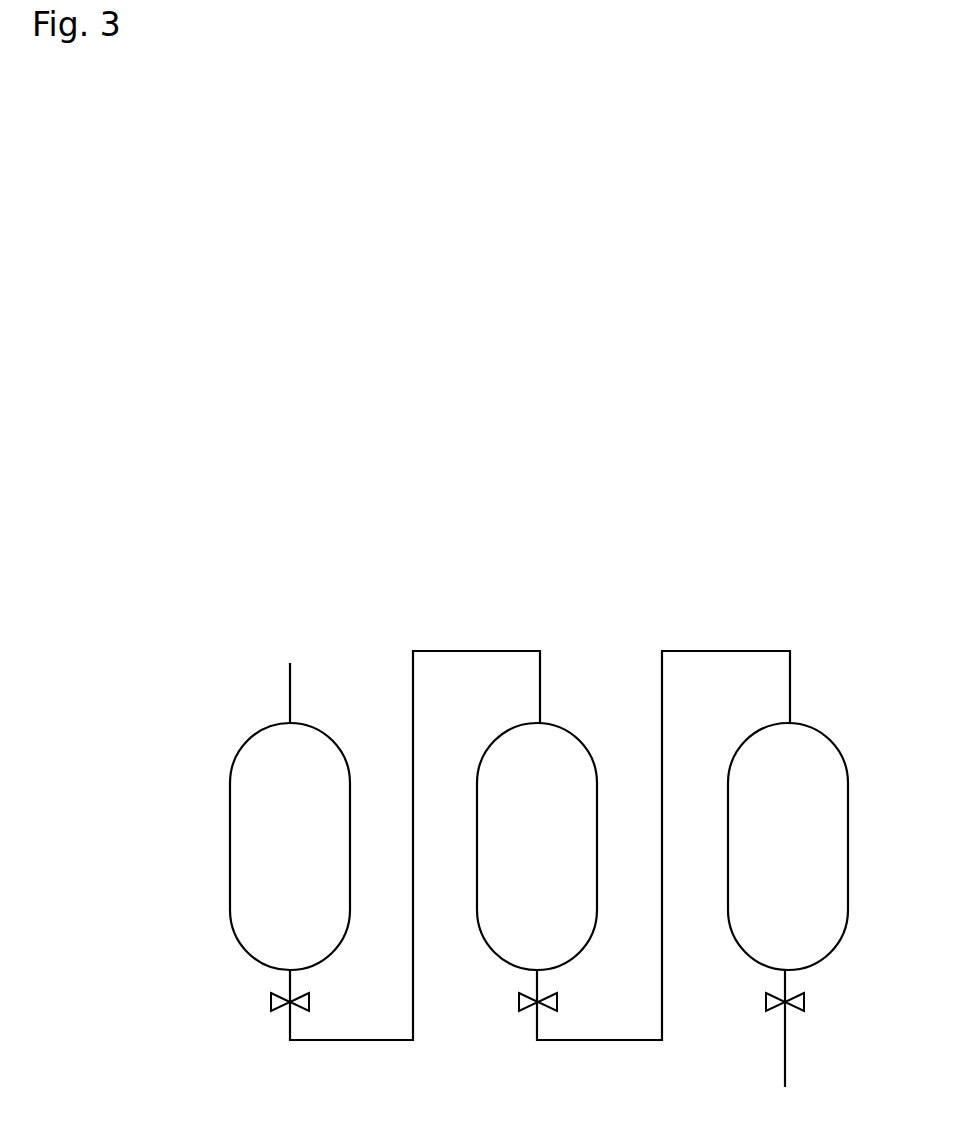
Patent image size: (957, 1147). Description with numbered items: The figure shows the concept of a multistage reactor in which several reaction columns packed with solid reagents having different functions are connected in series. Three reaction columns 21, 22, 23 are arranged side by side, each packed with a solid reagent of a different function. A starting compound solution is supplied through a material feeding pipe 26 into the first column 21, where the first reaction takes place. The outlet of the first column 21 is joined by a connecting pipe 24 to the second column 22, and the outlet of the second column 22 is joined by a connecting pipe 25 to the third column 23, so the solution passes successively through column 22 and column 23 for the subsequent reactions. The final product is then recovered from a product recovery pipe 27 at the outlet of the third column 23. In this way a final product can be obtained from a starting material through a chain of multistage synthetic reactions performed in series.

The reaction column 21 is at (290, 846).
The reaction column 22 is at (537, 846).
The reaction column 23 is at (788, 846).
The connecting pipe 24 is at (480, 648).
The connecting pipe 25 is at (706, 651).
The material feeding pipe 26 is at (290, 697).
The product recovery pipe 27 is at (785, 1060).